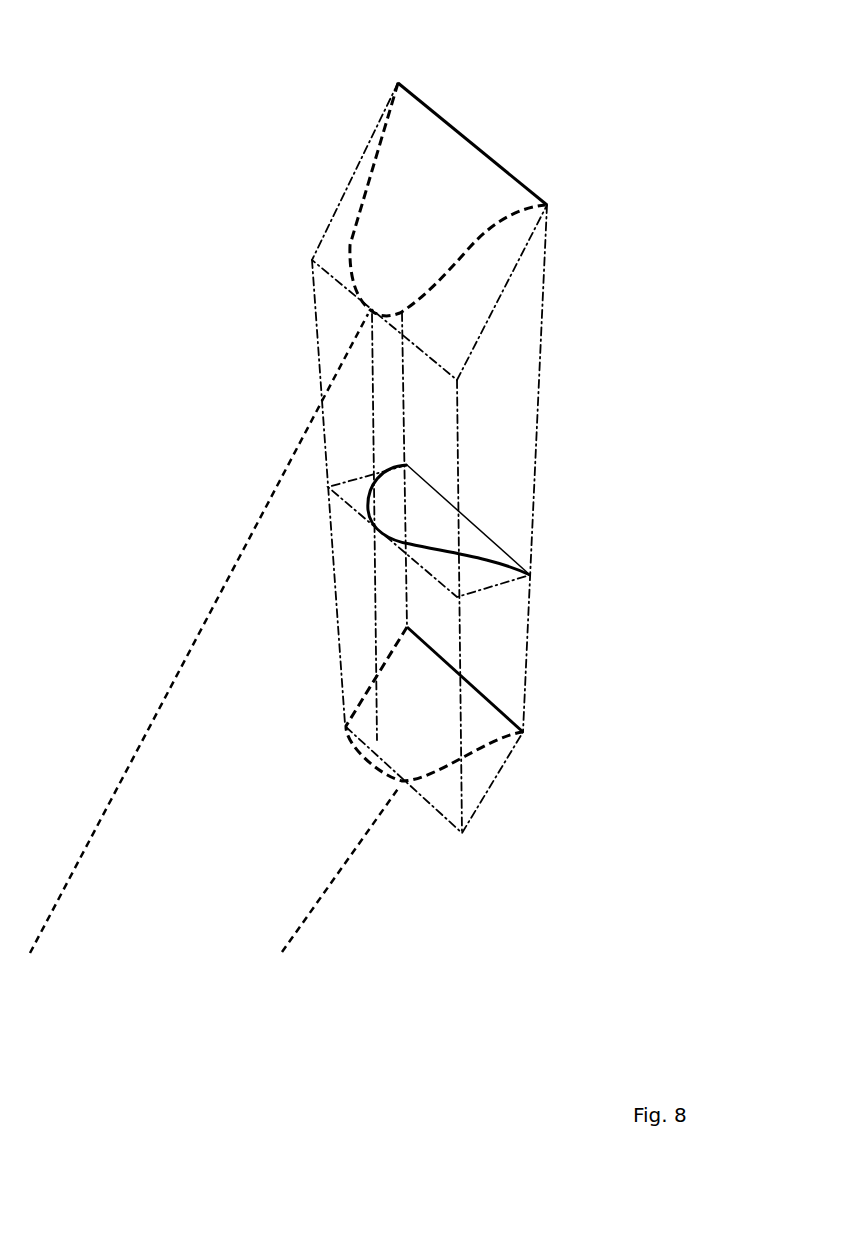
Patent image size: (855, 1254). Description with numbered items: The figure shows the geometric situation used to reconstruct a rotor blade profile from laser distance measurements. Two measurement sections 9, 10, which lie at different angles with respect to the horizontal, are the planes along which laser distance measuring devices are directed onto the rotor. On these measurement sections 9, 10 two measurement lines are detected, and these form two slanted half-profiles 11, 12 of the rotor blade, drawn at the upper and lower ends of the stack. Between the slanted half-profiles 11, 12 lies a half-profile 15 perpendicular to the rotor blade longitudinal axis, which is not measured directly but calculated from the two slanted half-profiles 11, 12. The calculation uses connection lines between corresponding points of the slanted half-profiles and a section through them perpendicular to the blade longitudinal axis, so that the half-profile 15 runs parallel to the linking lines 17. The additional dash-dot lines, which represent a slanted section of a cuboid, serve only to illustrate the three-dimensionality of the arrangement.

The measurement section 9 is at (240, 547).
The measurement section 10 is at (327, 882).
The slanted half-profile 11 is at (380, 122).
The slanted half-profile 12 is at (377, 737).
The half-profile 15 is at (367, 512).
The linking line 17 is at (473, 147).